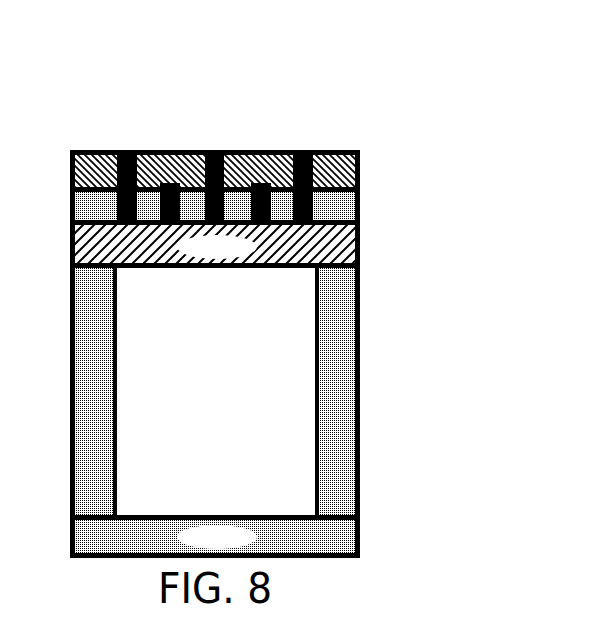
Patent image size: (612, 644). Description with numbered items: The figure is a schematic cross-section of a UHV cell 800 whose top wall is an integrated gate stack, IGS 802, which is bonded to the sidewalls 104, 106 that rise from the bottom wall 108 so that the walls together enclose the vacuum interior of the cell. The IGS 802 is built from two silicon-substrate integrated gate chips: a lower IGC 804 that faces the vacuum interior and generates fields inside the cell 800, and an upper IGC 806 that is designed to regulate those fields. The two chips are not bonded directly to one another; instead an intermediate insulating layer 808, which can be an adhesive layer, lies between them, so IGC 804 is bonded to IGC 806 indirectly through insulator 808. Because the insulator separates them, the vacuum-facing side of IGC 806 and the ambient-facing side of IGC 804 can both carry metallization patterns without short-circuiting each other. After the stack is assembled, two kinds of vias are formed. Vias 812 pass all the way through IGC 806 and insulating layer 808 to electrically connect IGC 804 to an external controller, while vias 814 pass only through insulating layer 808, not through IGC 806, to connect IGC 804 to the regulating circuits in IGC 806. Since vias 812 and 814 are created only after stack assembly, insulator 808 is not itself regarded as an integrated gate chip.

The UHV cell 800 is at (278, 76).
The silicon substrate IGC 806 is at (91, 150).
The IGS 802 is at (386, 186).
The insulating layer 808 is at (297, 206).
The vias 812 is at (212, 152).
The vias 814 is at (173, 183).
The silicon substrate IGC 804 is at (235, 256).
The sidewall 104 is at (70, 432).
The sidewall 106 is at (360, 460).
The bottom wall 108 is at (235, 546).